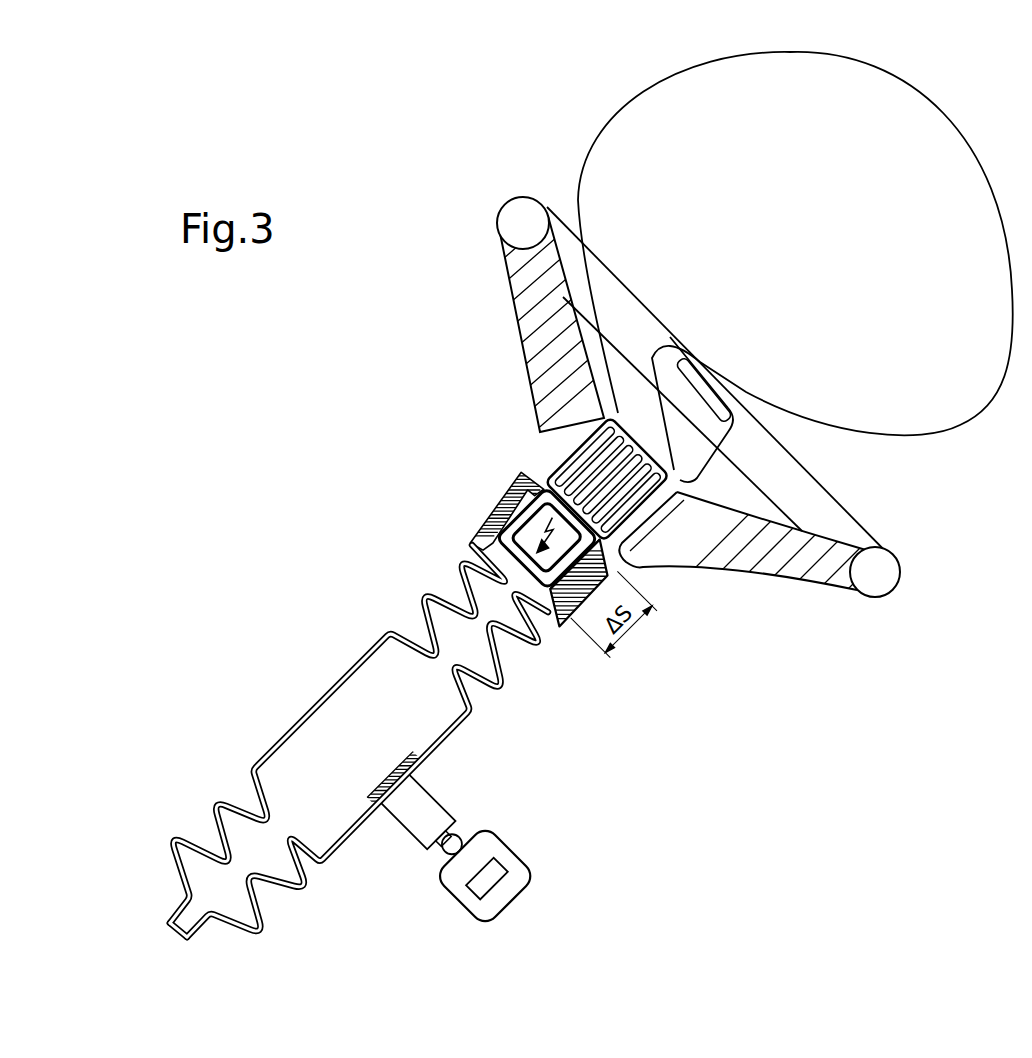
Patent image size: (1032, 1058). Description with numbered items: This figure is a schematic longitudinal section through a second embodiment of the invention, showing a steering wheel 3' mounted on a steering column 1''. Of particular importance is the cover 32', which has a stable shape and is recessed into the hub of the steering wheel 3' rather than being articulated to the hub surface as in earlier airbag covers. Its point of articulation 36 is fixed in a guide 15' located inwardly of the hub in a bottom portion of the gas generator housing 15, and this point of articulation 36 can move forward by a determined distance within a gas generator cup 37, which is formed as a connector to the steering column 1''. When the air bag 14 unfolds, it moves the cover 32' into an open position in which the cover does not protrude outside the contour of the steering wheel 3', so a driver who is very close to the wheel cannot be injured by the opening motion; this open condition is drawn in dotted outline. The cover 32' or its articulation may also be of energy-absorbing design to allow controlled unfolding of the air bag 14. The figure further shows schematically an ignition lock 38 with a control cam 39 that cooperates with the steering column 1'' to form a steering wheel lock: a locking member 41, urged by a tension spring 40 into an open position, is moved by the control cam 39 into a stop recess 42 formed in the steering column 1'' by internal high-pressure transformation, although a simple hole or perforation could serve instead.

The bellows / gas-filled hose 1'' is at (359, 741).
The steering wheel spoke 3' is at (565, 292).
The sensor / contact block 14 is at (547, 470).
The housing 15 is at (483, 511).
The flange on spoke 15' is at (812, 540).
The spring 32' is at (554, 422).
The electrode / contact 36 is at (550, 590).
The electrode / contact 37 is at (565, 625).
The key / remote unit 38 is at (500, 897).
The connector knob 39 is at (452, 838).
The plug 40 is at (433, 847).
The connector block 41 is at (420, 813).
The mounting pad 42 is at (403, 765).